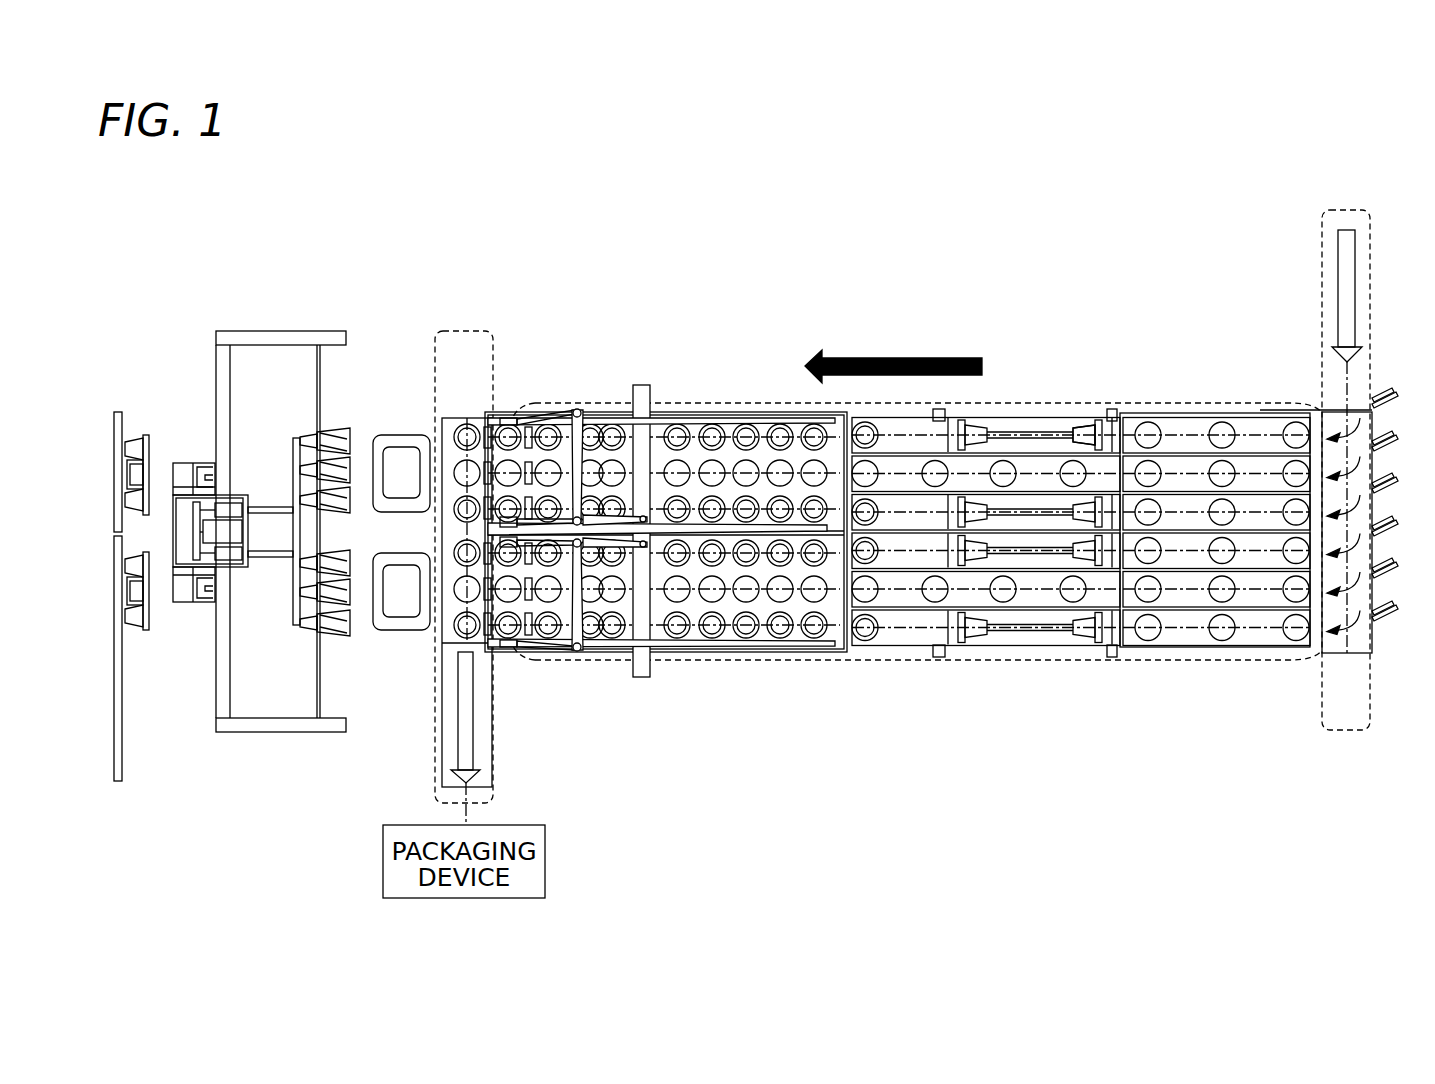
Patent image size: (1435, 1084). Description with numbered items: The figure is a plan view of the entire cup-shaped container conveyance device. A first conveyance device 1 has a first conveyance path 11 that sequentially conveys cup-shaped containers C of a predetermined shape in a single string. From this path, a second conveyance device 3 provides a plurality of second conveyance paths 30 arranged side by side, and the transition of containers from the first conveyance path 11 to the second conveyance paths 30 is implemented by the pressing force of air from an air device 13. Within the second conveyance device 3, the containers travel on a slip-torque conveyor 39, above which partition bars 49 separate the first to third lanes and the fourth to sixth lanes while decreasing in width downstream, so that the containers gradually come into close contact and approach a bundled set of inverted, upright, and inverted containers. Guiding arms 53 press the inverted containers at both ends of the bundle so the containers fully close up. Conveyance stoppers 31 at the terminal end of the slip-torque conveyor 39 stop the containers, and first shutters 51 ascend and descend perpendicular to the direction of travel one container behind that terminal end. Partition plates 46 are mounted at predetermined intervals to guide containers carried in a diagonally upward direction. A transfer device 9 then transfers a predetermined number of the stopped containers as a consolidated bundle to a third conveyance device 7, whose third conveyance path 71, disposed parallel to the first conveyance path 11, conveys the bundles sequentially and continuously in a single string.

The first conveyance device 1 is at (1322, 212).
The second conveyance device 3 is at (1028, 403).
The third conveyance device 7 is at (458, 332).
The transfer device 9 is at (400, 477).
The first conveyance path 11 is at (1320, 732).
The air device 13 is at (1385, 630).
The second conveyance paths 30 is at (842, 652).
The conveyance stoppers 31 is at (492, 645).
The slip-torque conveyor 39 is at (697, 606).
The partition plates 46 is at (1013, 627).
The partition bars 49 is at (764, 518).
The first shutters 51 is at (532, 412).
The guiding arms 53 is at (578, 608).
The third conveyance path 71 is at (133, 702).
The cup-shaped containers C is at (1085, 418).